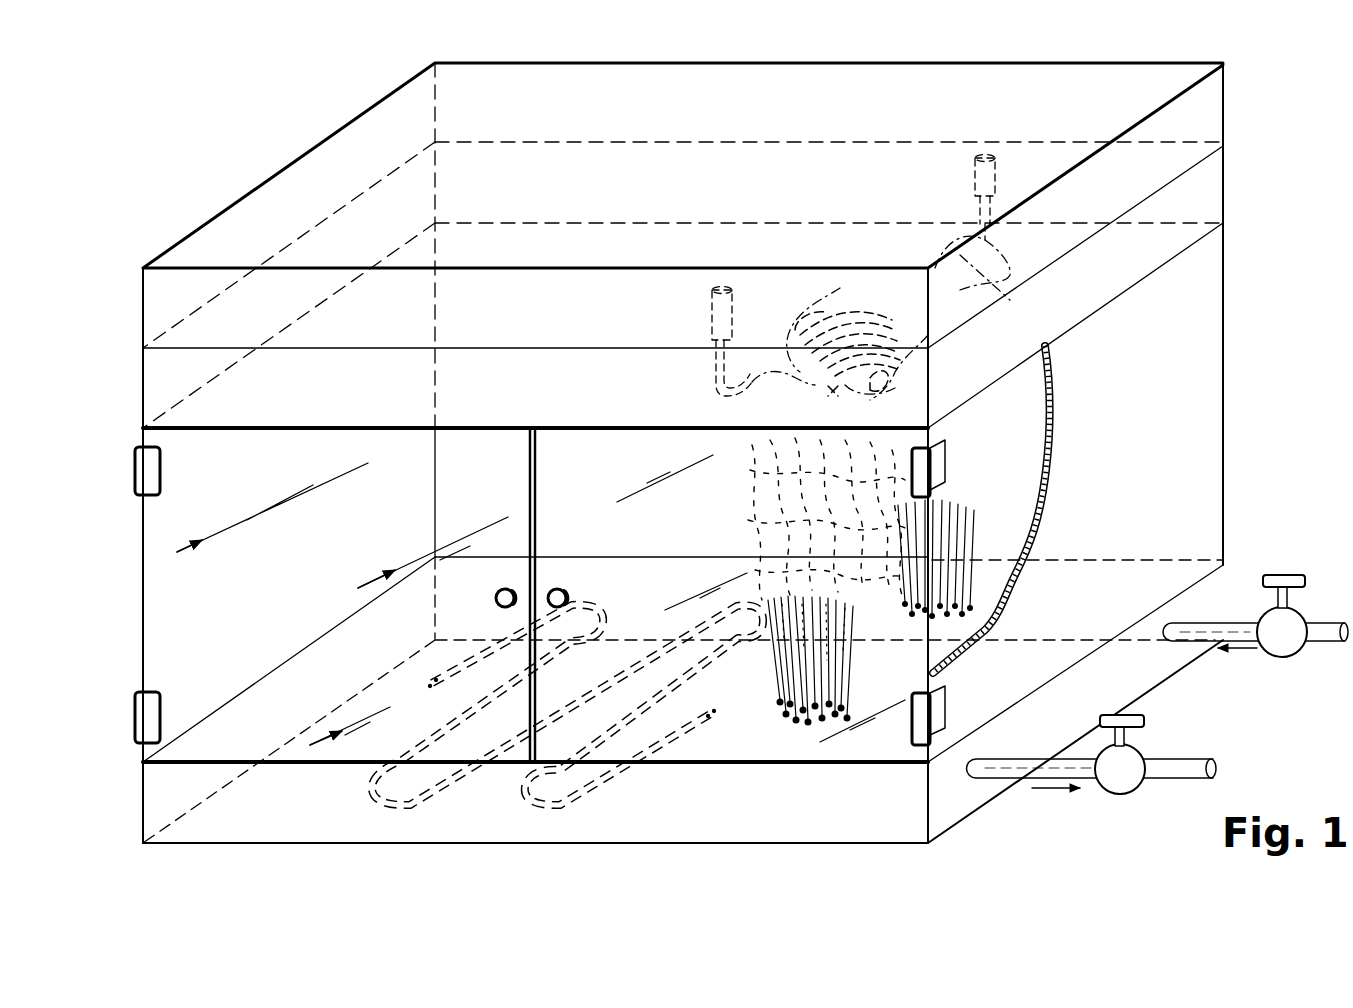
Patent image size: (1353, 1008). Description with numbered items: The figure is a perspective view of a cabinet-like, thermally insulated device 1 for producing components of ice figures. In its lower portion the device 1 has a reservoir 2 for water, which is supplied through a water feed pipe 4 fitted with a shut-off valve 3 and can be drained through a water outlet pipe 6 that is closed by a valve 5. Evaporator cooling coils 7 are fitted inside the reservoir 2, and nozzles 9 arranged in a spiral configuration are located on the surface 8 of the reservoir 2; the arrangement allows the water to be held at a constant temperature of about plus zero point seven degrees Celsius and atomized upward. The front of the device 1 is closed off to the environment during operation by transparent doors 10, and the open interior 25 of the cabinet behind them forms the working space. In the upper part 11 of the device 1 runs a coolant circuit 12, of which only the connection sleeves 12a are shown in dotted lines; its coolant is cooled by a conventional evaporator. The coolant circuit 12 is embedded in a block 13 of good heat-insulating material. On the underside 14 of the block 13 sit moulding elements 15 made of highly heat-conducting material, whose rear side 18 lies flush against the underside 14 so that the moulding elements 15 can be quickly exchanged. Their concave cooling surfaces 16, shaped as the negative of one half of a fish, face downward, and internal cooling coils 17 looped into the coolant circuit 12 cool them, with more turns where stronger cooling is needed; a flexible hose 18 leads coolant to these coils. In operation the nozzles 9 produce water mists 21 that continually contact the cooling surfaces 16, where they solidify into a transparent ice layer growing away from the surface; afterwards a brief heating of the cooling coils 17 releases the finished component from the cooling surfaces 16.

The device 1 is at (975, 828).
The reservoir 2 is at (655, 825).
The shut-off valve 3 is at (1295, 618).
The water feed pipe 4 is at (1240, 622).
The valve 5 is at (1132, 758).
The water outlet pipe 6 is at (1038, 767).
The evaporator cooling coils 7 is at (398, 810).
The surface of the reservoir 8 is at (200, 748).
The nozzles 9 is at (800, 725).
The doors 10 is at (325, 748).
The upper part 11 is at (1238, 145).
The coolant circuit 12 is at (755, 360).
The reservoirs 12a is at (975, 178).
The block 13 is at (1200, 112).
The underside of the block 14 is at (1173, 168).
The moulding elements 15 is at (1128, 268).
The cooling surfaces 16 is at (850, 398).
The cooling coils 17 is at (920, 332).
The rear side of the cooling surface 18 is at (1148, 186).
The water mists 21 is at (742, 488).
The treatment chamber 25 is at (198, 628).